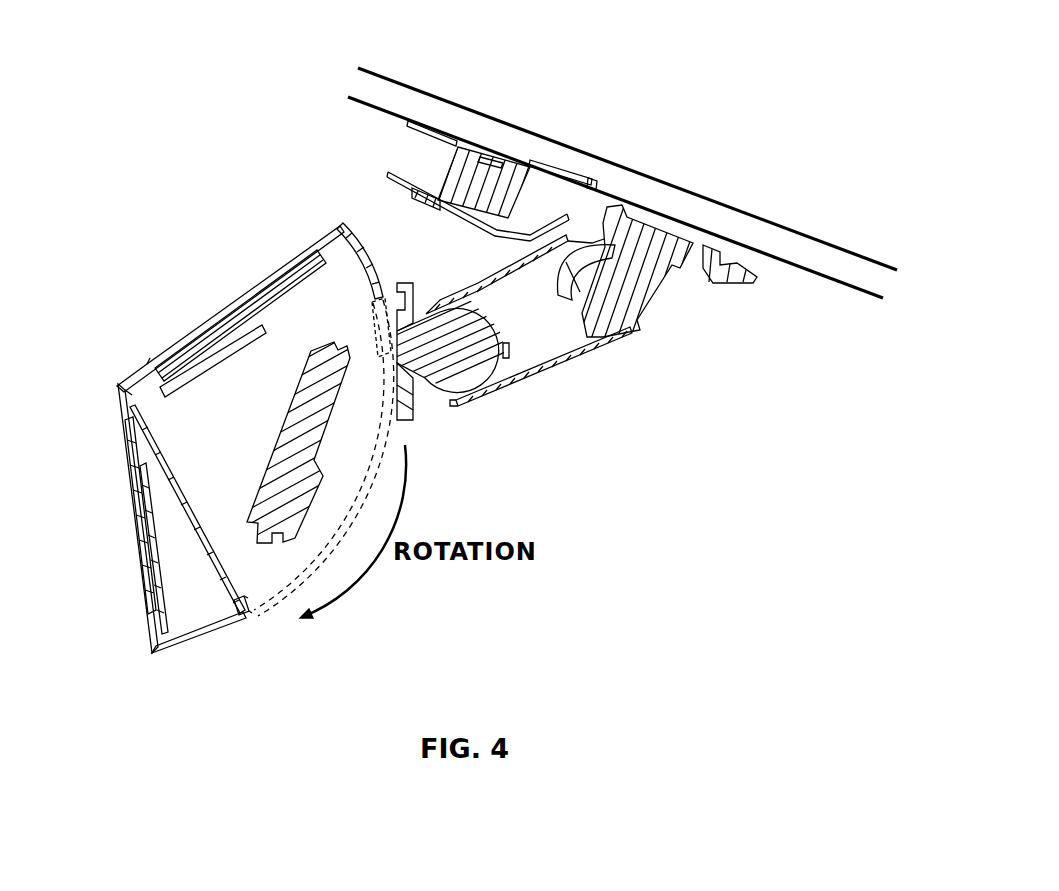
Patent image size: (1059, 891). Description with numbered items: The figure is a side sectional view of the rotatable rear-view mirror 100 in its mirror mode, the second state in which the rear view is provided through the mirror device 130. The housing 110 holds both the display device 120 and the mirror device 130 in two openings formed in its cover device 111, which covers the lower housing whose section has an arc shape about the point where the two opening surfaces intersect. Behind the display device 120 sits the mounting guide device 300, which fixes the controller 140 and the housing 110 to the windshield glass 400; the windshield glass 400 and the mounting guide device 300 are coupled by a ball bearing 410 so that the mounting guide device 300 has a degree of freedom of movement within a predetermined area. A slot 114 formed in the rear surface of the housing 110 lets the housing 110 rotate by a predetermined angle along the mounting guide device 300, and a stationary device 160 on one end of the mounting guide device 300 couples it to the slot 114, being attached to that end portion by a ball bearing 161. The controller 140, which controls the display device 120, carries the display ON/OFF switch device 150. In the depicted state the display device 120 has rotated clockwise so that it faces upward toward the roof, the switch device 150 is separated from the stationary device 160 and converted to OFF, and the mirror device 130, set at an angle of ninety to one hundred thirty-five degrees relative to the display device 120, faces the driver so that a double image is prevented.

The rotatable rear-view mirror 100 is at (297, 45).
The housing 110 is at (343, 226).
The cover device 111 is at (126, 372).
The slot 114 is at (320, 565).
The display device 120 is at (227, 317).
The mirror device 130 is at (132, 520).
The controller 140 is at (228, 566).
The display ON/OFF switch device 150 is at (248, 612).
The stationary device 160 is at (412, 284).
The ball bearing 161 is at (457, 390).
The mounting guide device 300 is at (550, 382).
The windshield glass 400 is at (809, 250).
The ball bearing 410 is at (622, 317).